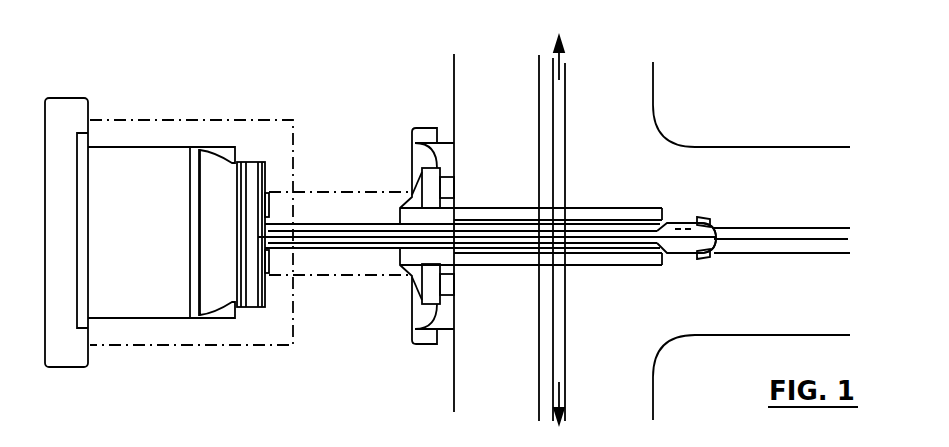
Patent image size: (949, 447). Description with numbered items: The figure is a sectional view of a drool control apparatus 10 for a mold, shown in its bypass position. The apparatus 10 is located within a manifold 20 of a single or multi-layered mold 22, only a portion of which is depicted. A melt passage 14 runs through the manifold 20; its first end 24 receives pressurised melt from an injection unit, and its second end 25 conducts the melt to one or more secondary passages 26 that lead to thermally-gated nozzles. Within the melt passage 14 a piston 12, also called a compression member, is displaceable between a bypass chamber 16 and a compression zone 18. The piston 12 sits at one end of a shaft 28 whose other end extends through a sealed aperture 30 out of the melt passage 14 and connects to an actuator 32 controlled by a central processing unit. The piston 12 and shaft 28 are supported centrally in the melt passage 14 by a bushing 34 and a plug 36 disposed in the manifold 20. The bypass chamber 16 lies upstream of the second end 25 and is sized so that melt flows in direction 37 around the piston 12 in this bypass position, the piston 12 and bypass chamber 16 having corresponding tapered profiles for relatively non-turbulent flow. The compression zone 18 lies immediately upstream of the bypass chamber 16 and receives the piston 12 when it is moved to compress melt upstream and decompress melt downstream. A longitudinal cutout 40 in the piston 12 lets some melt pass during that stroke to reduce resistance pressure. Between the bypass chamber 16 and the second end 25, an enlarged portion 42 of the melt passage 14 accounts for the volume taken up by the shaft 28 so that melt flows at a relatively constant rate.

The drool control apparatus 10 is at (640, 154).
The piston 12 is at (714, 225).
The melt passage 14 is at (745, 233).
The bypass chamber 16 is at (691, 222).
The compression zone 18 is at (790, 266).
The manifold 20 is at (640, 73).
The mold 22 is at (680, 83).
The first end 24 is at (842, 257).
The second end 25 is at (573, 218).
The secondary passages 26 is at (543, 157).
The shaft 28 is at (585, 253).
The sealed aperture 30 is at (535, 245).
The actuator 32 is at (270, 134).
The bushing 34 is at (433, 318).
The plug 36 is at (620, 265).
The direction of melt flow 37 is at (862, 239).
The longitudinal cutout 40 is at (703, 215).
The enlarged portion 42 is at (633, 255).